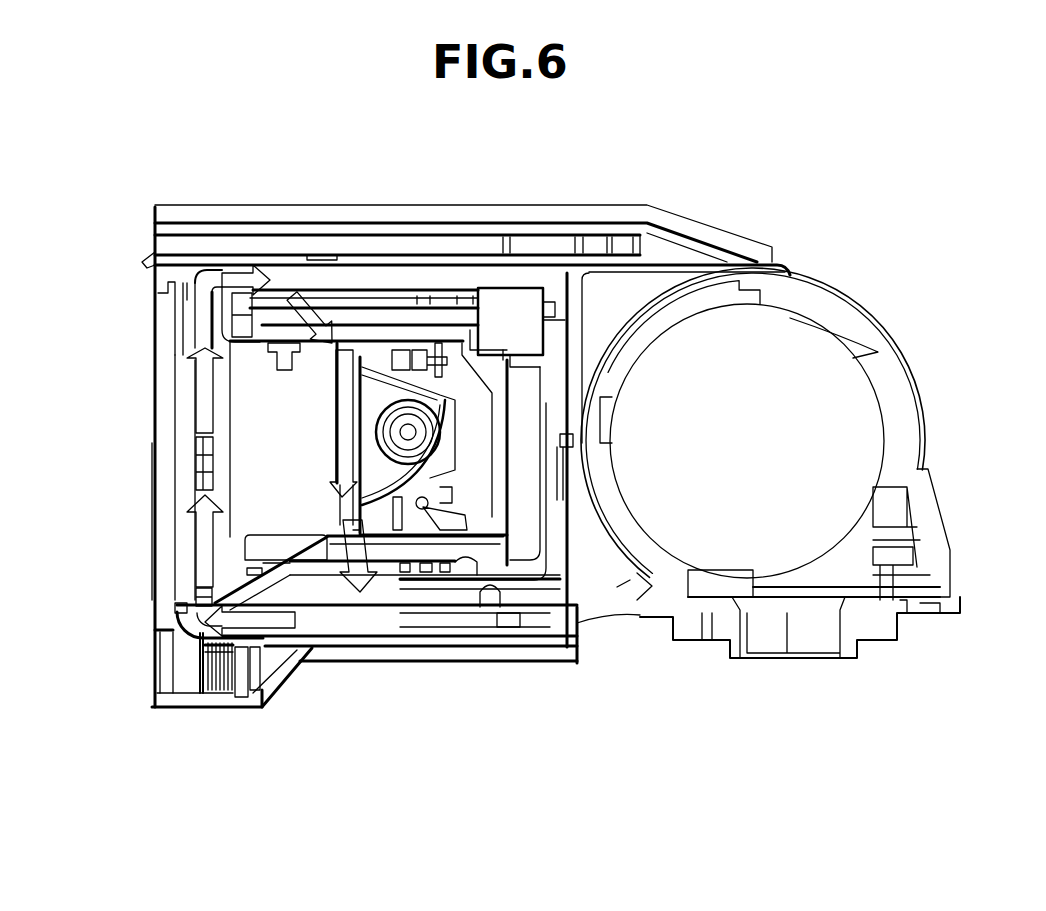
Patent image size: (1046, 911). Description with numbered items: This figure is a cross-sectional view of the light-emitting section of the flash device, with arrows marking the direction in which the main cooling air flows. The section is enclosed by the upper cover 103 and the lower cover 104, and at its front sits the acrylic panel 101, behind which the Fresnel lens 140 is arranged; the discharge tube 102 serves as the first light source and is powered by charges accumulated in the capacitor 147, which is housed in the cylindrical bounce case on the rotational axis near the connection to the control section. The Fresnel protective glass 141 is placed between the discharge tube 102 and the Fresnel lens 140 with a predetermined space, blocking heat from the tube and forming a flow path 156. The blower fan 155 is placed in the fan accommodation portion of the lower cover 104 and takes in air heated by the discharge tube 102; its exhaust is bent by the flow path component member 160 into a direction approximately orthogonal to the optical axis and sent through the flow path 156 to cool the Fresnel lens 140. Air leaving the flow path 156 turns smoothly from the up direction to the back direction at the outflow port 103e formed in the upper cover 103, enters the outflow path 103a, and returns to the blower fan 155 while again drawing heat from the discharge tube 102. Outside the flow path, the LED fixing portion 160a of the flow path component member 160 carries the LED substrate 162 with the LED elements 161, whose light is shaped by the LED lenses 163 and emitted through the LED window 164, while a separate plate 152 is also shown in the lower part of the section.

The acrylic panel 101 is at (155, 428).
The discharge tube 102 is at (373, 430).
The upper cover 103 is at (573, 270).
The outflow path 103a is at (360, 277).
The outflow port 103e is at (200, 272).
The lower cover 104 is at (407, 660).
The Fresnel lens 140 is at (182, 387).
The Fresnel protective glass 141 is at (205, 452).
The capacitor 147 is at (823, 365).
The partition plate 152 is at (570, 640).
The blower fan 155 is at (497, 630).
The flow path 156 is at (195, 332).
The flow path component member 160 is at (185, 617).
The LED fixing portion 160a is at (258, 650).
The LED elements 161 is at (228, 698).
The LED substrate 162 is at (240, 698).
The LED lenses 163 is at (187, 672).
The LED window 164 is at (150, 657).